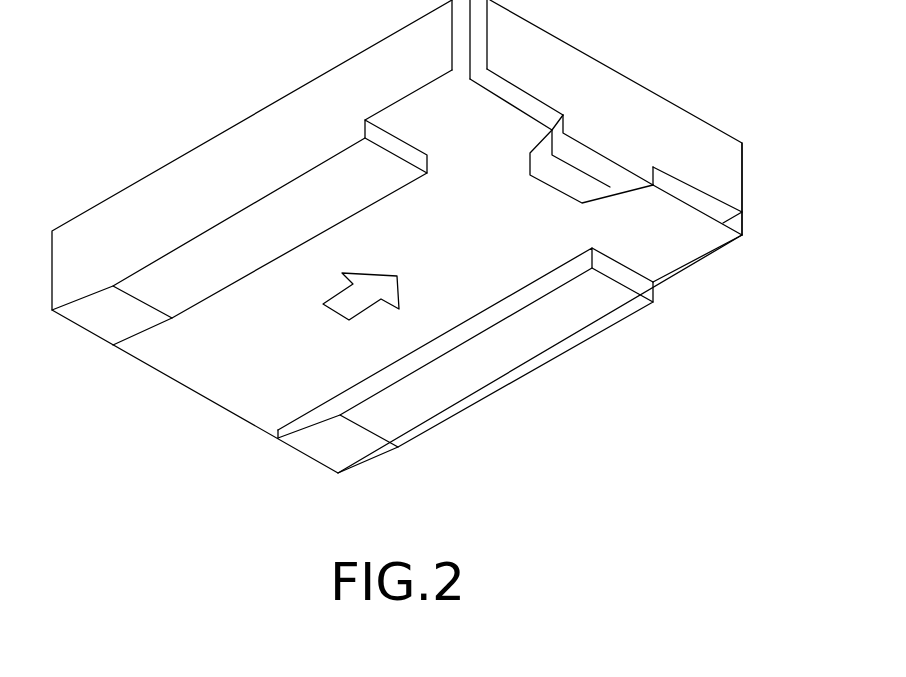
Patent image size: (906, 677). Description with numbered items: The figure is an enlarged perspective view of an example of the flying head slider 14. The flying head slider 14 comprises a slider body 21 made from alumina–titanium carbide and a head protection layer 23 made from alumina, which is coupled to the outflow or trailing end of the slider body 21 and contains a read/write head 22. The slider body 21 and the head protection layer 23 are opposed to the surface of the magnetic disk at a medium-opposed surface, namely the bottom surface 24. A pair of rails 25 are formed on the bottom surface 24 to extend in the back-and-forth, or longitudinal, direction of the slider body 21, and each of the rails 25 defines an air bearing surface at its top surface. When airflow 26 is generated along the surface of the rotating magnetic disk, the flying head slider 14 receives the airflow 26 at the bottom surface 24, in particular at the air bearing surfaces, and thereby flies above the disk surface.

The flying head slider 14 is at (260, 102).
The slider body 21 is at (703, 256).
The read/write head 22 is at (592, 158).
The head protection layer 23 is at (743, 163).
The bottom surface 24 is at (472, 267).
The rails 25 is at (224, 289).
The airflow 26 is at (338, 315).